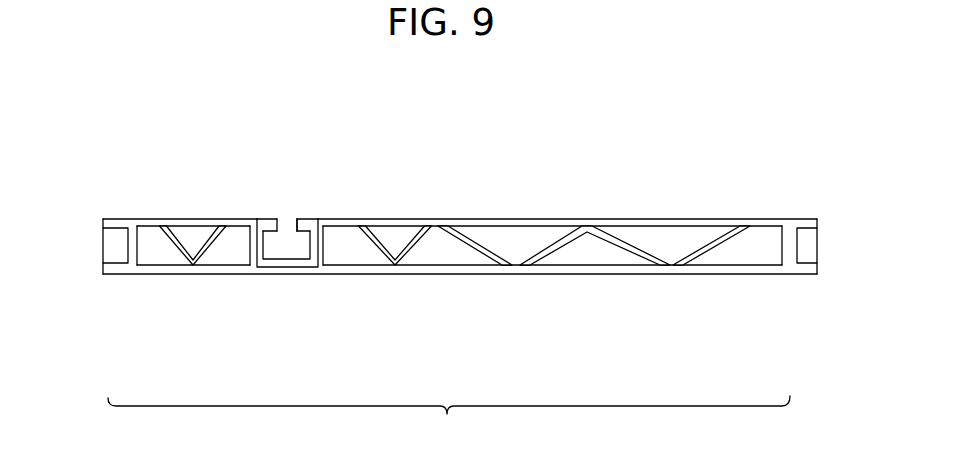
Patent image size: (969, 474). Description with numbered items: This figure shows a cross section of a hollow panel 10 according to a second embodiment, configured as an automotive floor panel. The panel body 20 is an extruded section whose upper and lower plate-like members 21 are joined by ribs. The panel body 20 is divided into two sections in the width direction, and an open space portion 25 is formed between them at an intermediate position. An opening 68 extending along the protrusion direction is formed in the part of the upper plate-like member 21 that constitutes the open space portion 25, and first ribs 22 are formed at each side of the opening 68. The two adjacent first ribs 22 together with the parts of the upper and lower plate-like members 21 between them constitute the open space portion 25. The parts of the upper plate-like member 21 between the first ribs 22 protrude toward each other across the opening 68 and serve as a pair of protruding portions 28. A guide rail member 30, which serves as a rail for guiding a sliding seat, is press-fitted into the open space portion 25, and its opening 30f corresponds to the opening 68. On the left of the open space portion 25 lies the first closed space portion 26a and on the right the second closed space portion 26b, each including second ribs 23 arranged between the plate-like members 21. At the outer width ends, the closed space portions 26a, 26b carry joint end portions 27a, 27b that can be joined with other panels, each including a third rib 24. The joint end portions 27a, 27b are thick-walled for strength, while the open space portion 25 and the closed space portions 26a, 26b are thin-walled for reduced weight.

The hollow panel 10 is at (808, 171).
The panel body 20 is at (449, 422).
The upper and lower plate-like members 21 is at (643, 218).
The first ribs 22 is at (252, 247).
The second ribs 23 is at (176, 234).
The third rib 24 is at (125, 243).
The open space portion 25 is at (287, 288).
The first closed space portion 26a is at (190, 288).
The second closed space portion 26b is at (488, 288).
The joint end portion 27a is at (119, 288).
The joint end portion 27b is at (802, 288).
The protruding portions 28 is at (273, 222).
The guide rail member 30 is at (287, 232).
The opening 30f is at (298, 230).
The opening 68 is at (284, 238).